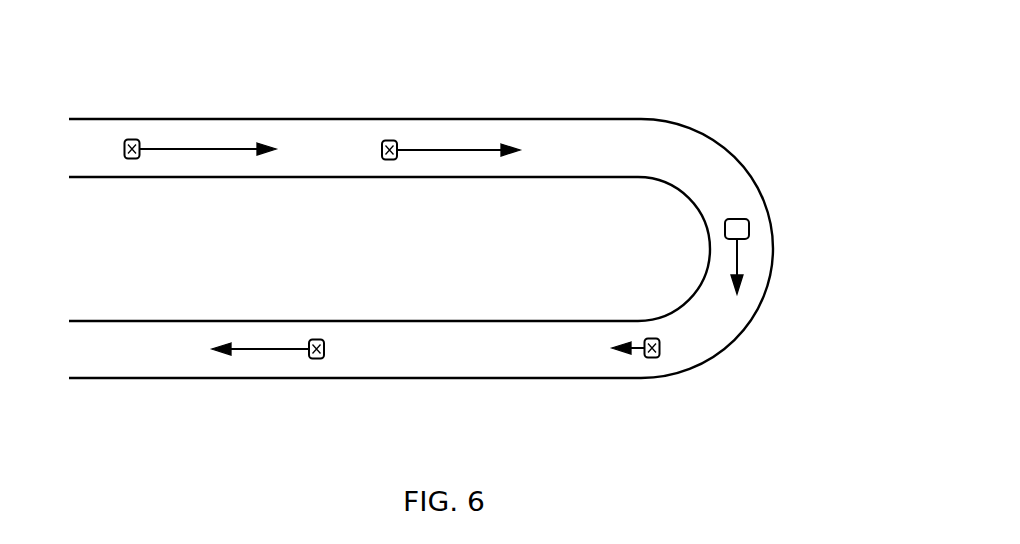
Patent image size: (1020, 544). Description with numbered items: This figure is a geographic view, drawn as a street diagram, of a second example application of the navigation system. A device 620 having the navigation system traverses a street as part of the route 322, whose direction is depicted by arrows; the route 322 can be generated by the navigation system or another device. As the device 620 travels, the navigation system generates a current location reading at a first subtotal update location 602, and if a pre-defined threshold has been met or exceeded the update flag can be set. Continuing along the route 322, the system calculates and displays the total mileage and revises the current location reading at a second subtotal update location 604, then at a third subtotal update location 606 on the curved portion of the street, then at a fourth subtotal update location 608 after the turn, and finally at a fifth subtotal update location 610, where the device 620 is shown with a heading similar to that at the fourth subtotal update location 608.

The route 322 is at (327, 172).
The first subtotal update location 602 is at (132, 139).
The second subtotal update location 604 is at (390, 140).
The third subtotal update location 606 is at (750, 224).
The fourth subtotal update location 608 is at (659, 346).
The fifth subtotal update location 610 is at (310, 357).
The device 620 is at (124, 146).